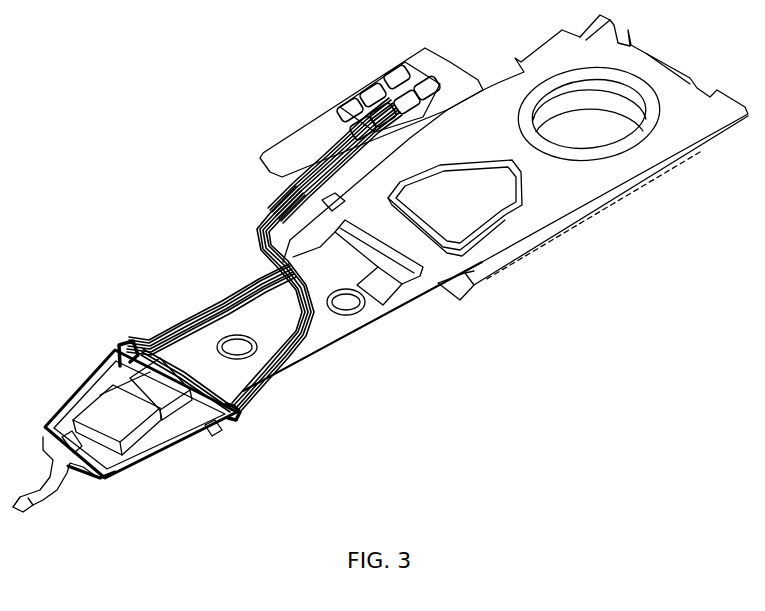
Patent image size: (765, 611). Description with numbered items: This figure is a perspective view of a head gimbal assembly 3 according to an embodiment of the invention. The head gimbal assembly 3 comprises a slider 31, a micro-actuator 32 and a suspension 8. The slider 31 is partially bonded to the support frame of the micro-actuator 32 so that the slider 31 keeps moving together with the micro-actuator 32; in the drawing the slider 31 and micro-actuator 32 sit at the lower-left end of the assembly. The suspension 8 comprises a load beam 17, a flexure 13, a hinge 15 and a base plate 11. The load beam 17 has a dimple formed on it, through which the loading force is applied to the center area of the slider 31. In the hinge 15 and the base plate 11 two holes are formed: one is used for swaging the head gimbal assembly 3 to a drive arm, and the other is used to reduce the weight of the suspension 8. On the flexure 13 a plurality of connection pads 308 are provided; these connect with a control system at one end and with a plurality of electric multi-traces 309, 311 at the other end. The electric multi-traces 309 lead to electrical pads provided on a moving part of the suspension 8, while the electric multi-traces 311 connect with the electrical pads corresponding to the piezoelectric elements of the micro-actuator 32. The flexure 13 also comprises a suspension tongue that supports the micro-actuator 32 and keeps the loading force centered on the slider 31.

The head gimbal assembly 3 is at (146, 107).
The suspension 8 is at (248, 520).
The base plate 11 is at (475, 300).
The flexure 13 is at (296, 347).
The hinge 15 is at (562, 192).
The load beam 17 is at (97, 477).
The slider 31 is at (103, 410).
The micro-actuator 32 is at (190, 427).
The connection pads 308 is at (340, 107).
The electric multi-traces 309 is at (125, 340).
The electric multi-traces 311 is at (202, 385).